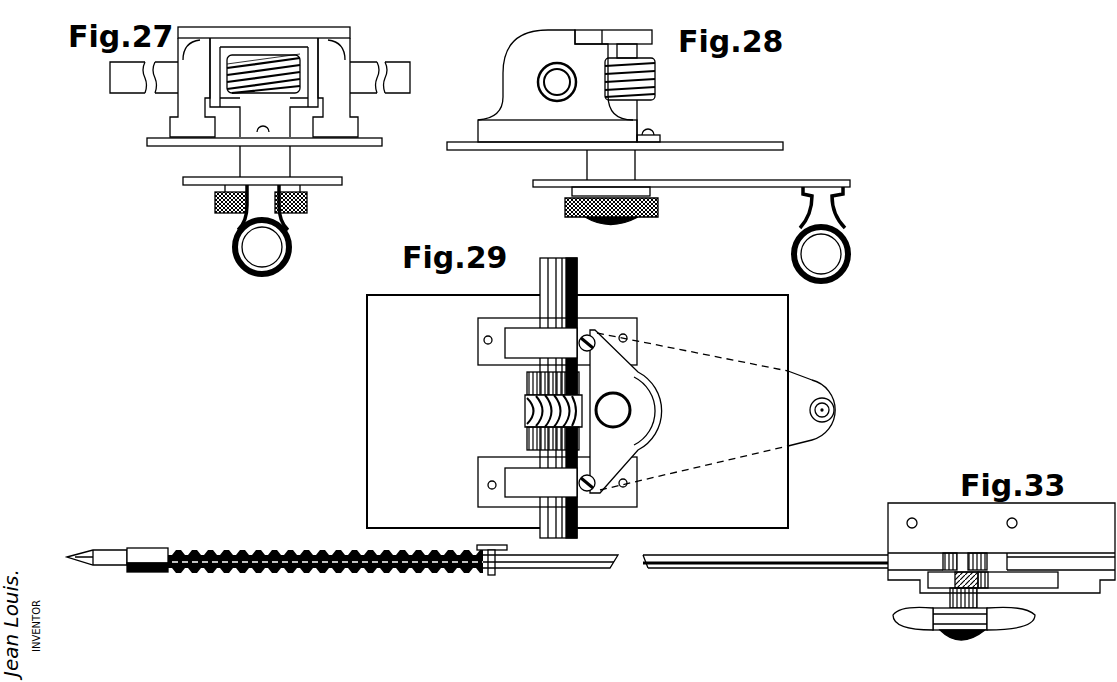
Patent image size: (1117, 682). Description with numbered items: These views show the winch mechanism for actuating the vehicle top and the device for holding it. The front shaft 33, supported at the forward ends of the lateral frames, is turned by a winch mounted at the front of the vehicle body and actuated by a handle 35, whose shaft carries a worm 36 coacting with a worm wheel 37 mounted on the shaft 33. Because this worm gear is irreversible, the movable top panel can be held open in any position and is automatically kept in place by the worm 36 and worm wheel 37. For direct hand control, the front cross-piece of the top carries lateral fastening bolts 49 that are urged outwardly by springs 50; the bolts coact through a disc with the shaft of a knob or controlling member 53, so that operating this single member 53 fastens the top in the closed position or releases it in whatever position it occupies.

In FIG. 27, the shaft 33 is at (127, 87).
In FIG. 29, the shaft 33 is at (561, 283).
In FIG. 27, the handle 35 is at (291, 247).
In FIG. 28, the handle 35 is at (808, 233).
In FIG. 29, the handle 35 is at (829, 423).
In FIG. 27, the worm 36 is at (238, 92).
In FIG. 28, the worm 36 is at (655, 87).
In FIG. 29, the worm 36 is at (660, 403).
In FIG. 29, the worm wheel 37 is at (530, 414).
In FIG. 33, the lateral fastening bolt 49 is at (112, 552).
In FIG. 33, the spring 50 is at (270, 550).
In FIG. 33, the knob or controlling member 53 is at (952, 620).